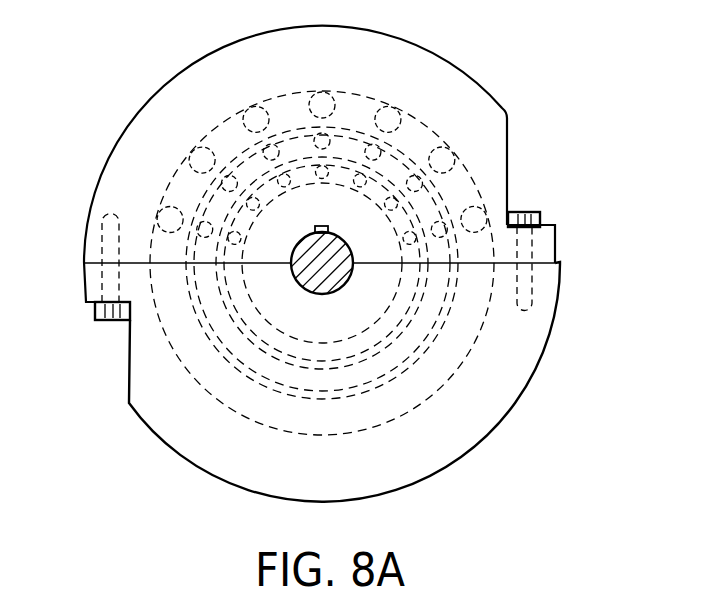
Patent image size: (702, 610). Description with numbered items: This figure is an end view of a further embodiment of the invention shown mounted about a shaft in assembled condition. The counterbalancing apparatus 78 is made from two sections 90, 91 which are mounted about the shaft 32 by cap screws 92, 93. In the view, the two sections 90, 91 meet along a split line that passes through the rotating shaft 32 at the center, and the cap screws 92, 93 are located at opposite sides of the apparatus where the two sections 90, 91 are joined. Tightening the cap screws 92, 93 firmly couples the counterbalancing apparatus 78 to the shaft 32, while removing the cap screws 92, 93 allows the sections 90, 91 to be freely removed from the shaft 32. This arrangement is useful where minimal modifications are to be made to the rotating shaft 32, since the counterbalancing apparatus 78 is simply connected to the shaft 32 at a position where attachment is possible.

The counterbalancing apparatus 78 is at (112, 428).
The section 90 is at (186, 73).
The section 91 is at (481, 423).
The cap screw 92 is at (110, 322).
The cap screw 93 is at (527, 212).
The shaft 32 is at (305, 290).